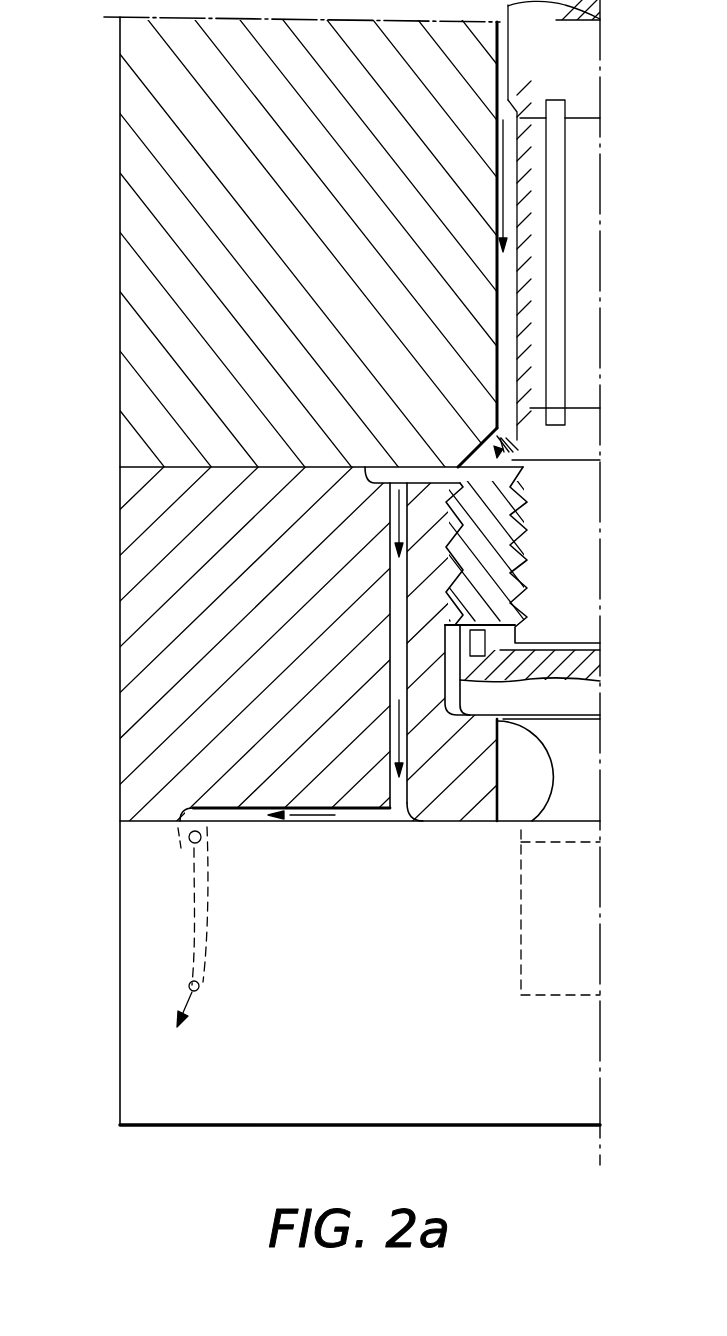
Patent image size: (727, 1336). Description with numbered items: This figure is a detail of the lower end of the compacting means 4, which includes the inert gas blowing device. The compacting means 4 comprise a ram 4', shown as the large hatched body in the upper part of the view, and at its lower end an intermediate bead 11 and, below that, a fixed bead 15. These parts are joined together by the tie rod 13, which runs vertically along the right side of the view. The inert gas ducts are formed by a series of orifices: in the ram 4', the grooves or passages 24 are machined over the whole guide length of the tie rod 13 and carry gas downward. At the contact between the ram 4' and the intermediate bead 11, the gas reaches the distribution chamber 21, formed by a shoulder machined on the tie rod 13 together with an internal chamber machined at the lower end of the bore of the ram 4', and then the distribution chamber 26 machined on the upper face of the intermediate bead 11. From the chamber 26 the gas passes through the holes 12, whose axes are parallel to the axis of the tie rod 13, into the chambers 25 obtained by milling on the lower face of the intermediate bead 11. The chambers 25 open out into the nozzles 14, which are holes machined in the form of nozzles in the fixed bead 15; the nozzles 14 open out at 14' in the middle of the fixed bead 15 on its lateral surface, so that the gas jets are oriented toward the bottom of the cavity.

The compacting means 4 is at (345, 233).
The ram 4' is at (363, 262).
The intermediate bead 11 is at (135, 512).
The holes 12 is at (410, 616).
The tie rod 13 is at (590, 200).
The nozzles 14 is at (239, 906).
The nozzle outlet 14' is at (240, 980).
The fixed bead 15 is at (130, 1030).
The distribution chamber 21 is at (515, 447).
The grooves or passages 24 is at (512, 305).
The chambers 25 is at (215, 822).
The distribution chamber 26 is at (440, 494).